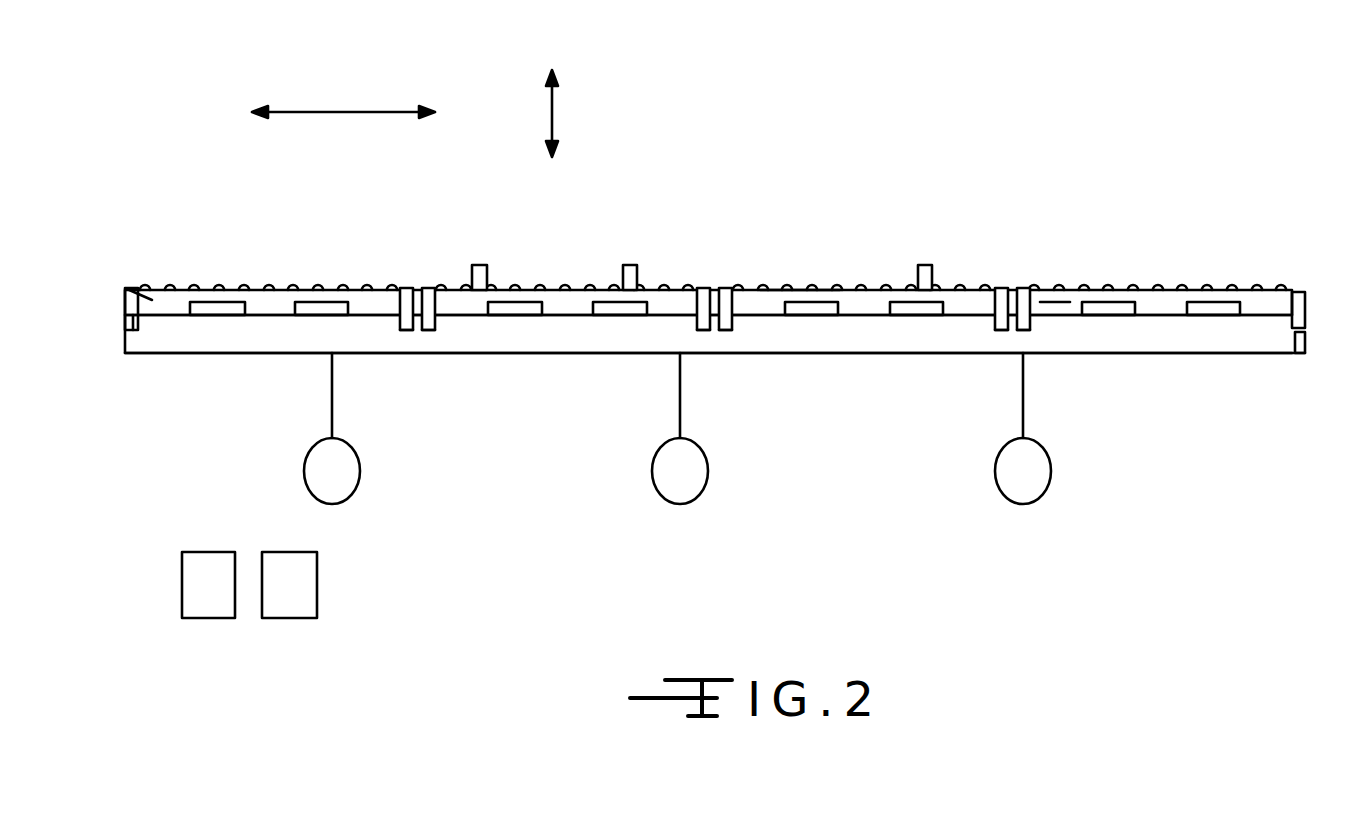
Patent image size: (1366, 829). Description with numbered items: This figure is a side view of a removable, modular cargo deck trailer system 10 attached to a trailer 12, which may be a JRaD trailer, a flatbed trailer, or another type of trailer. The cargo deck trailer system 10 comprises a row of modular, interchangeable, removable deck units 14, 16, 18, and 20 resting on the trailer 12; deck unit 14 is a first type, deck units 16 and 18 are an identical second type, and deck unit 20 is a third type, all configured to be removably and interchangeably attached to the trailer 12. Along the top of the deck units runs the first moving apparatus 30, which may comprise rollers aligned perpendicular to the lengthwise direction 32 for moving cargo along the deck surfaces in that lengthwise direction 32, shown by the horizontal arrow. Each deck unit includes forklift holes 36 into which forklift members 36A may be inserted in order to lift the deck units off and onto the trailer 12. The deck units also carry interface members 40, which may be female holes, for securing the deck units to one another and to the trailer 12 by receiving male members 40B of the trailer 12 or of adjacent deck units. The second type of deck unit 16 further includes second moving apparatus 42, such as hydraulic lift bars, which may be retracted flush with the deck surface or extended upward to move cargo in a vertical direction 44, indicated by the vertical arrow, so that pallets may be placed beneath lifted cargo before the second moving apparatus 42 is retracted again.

The cargo deck trailer system 10 is at (878, 197).
The trailer 12 is at (833, 345).
The deck unit 14 is at (127, 289).
The deck unit 16 is at (510, 292).
The deck unit 18 is at (783, 298).
The deck unit 20 is at (1058, 300).
The first moving apparatus 30 is at (193, 285).
The lengthwise direction 32 is at (340, 112).
The forklift holes 36 is at (305, 312).
The forklift members 36A is at (270, 620).
The interface members 40 is at (424, 290).
The male members 40B is at (128, 322).
The second moving apparatus 42 is at (478, 265).
The vertical direction 44 is at (553, 110).